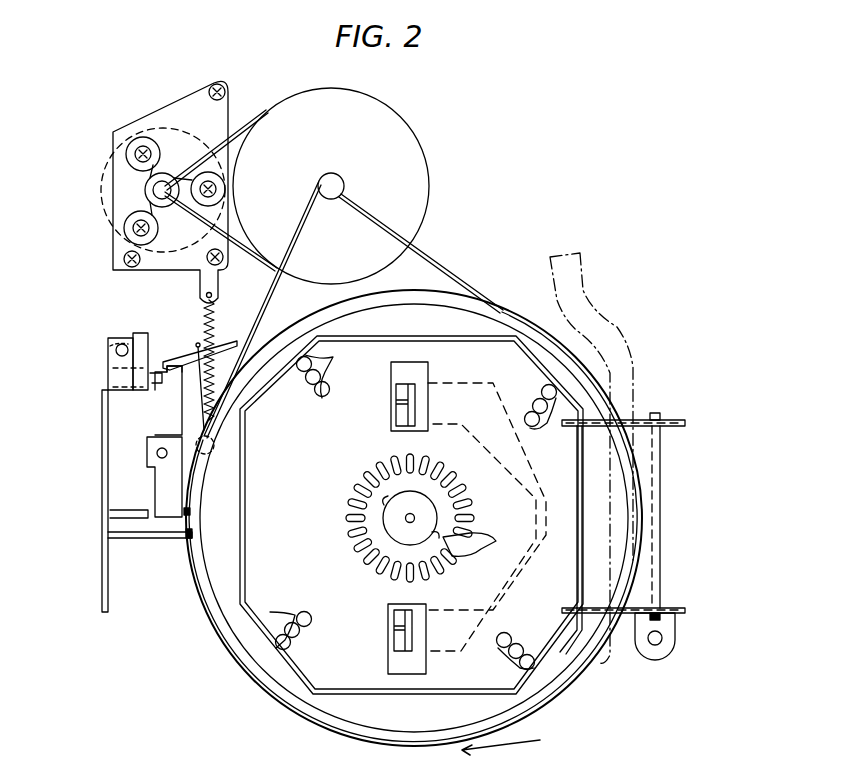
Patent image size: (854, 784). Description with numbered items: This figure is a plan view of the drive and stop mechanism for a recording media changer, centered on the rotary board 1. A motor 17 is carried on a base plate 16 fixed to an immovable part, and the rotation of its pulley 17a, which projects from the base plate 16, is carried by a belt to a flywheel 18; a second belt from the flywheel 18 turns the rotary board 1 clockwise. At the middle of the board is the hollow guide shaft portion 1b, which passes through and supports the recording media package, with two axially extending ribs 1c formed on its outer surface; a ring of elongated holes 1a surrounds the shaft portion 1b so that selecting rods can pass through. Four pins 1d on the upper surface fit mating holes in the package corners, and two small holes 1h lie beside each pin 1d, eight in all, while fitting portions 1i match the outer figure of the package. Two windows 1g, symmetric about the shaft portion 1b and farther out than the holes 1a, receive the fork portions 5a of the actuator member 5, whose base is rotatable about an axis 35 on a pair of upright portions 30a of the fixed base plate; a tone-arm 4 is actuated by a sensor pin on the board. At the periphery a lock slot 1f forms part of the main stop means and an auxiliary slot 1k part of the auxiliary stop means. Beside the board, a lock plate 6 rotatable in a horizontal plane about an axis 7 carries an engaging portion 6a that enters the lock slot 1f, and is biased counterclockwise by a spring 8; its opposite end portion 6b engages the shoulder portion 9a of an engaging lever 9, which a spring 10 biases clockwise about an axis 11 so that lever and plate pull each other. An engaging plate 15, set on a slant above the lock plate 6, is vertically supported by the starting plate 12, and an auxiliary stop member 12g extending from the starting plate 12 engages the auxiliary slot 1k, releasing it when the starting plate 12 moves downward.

The rotary board 1 is at (212, 628).
The elongated holes 1a is at (490, 540).
The hollow guide shaft portion 1b is at (397, 533).
The axially extending ribs 1c is at (386, 500).
The pins 1d is at (306, 382).
The lock slot 1f is at (192, 512).
The windows 1g is at (426, 370).
The small holes 1h is at (322, 362).
The fitting portions 1i is at (375, 695).
The auxiliary slot 1k is at (190, 545).
The tone-arm 4 is at (625, 345).
The actuator member 5 is at (662, 448).
The arm end portions 5a is at (396, 396).
The lock plate 6 is at (155, 432).
The engaging portion 6a is at (108, 514).
The end portion 6b is at (173, 376).
The axis 7 is at (157, 455).
The spring 8 is at (211, 330).
The engaging lever 9 is at (130, 344).
The shoulder portion 9a is at (165, 358).
The spring 10 is at (213, 422).
The axis 11 is at (112, 350).
The starting plate 12 is at (102, 462).
The auxiliary stop member 12g is at (135, 542).
The engaging plate 15 is at (152, 384).
The base plate 16 is at (178, 106).
The motor 17 is at (147, 188).
The pulley 17a is at (124, 220).
The flywheel 18 is at (415, 160).
The upright portions 30a is at (640, 419).
The axis 35 is at (662, 414).